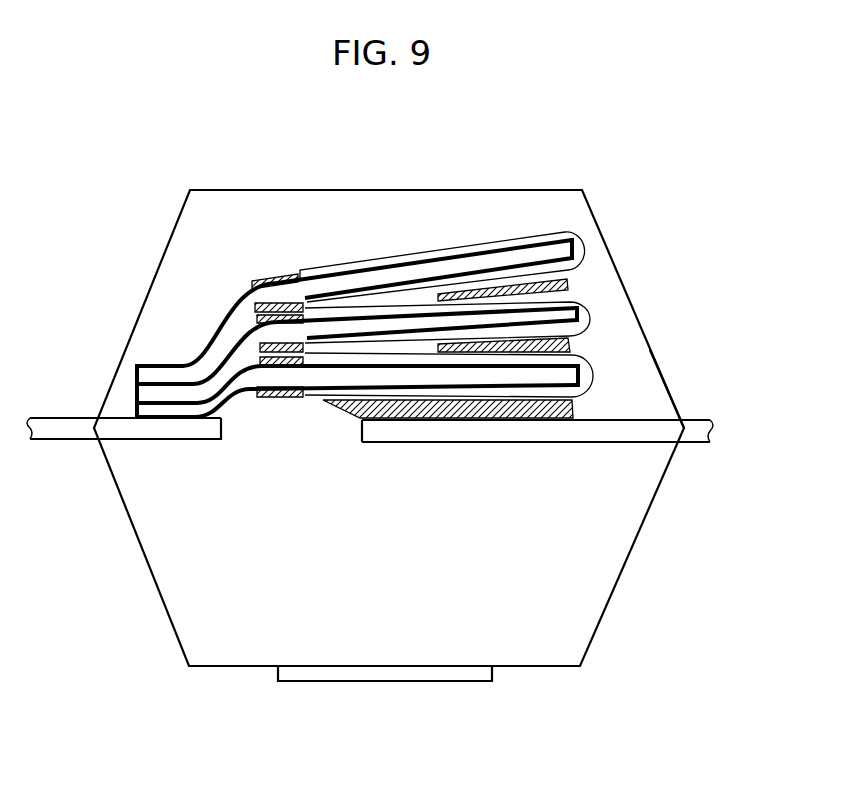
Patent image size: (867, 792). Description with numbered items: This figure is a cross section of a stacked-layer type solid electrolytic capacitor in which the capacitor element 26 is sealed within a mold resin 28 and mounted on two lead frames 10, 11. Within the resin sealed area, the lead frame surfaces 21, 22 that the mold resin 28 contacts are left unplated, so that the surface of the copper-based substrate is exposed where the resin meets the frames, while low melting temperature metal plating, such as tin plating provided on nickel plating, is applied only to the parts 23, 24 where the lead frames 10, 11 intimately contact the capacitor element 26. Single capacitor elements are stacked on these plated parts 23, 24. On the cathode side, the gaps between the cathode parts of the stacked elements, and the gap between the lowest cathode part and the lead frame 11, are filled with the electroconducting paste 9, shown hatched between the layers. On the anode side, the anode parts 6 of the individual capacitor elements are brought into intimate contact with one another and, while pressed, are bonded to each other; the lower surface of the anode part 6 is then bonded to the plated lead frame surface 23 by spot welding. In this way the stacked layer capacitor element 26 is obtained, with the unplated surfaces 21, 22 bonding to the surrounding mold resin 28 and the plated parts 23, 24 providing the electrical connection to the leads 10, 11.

The anode parts 6 is at (157, 352).
The electroconducting paste 9 is at (572, 283).
The lead frame 10 is at (75, 430).
The lead frame 11 is at (480, 430).
The lead frame surface 21 is at (123, 403).
The lead frame surface 22 is at (622, 417).
The plated part 23 is at (224, 412).
The plated part 24 is at (352, 422).
The capacitor element 26 is at (461, 232).
The mold resin 28 is at (613, 547).